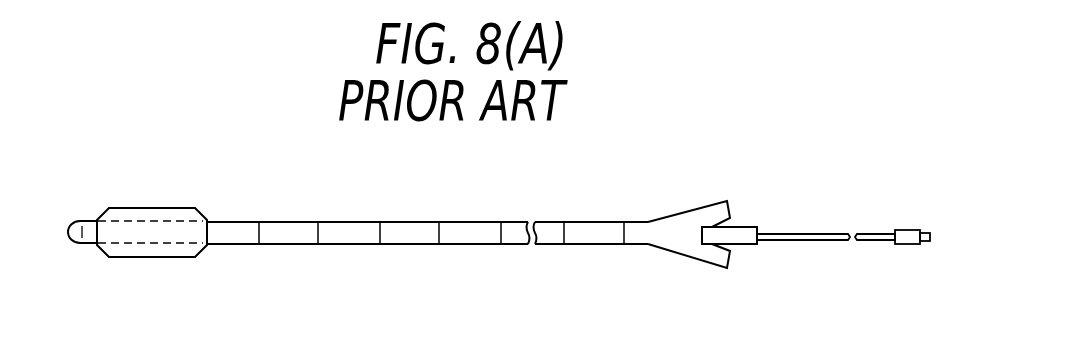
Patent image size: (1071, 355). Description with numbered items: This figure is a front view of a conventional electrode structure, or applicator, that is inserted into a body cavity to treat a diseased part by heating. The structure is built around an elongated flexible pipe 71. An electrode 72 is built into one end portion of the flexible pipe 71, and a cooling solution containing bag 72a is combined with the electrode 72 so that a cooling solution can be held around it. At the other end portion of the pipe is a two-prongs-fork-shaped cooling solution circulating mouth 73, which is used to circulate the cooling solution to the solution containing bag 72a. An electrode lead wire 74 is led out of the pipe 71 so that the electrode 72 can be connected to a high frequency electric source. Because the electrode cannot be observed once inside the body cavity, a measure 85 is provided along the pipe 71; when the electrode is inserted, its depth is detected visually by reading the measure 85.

The elongated flexible pipe 71 is at (427, 245).
The electrode 72 is at (135, 269).
The cooling solution containing bag 72a is at (152, 207).
The two-prongs-fork-shaped cooling solution circulating mouth 73 is at (720, 222).
The electrode lead wire 74 is at (843, 196).
The measure 85 is at (368, 270).